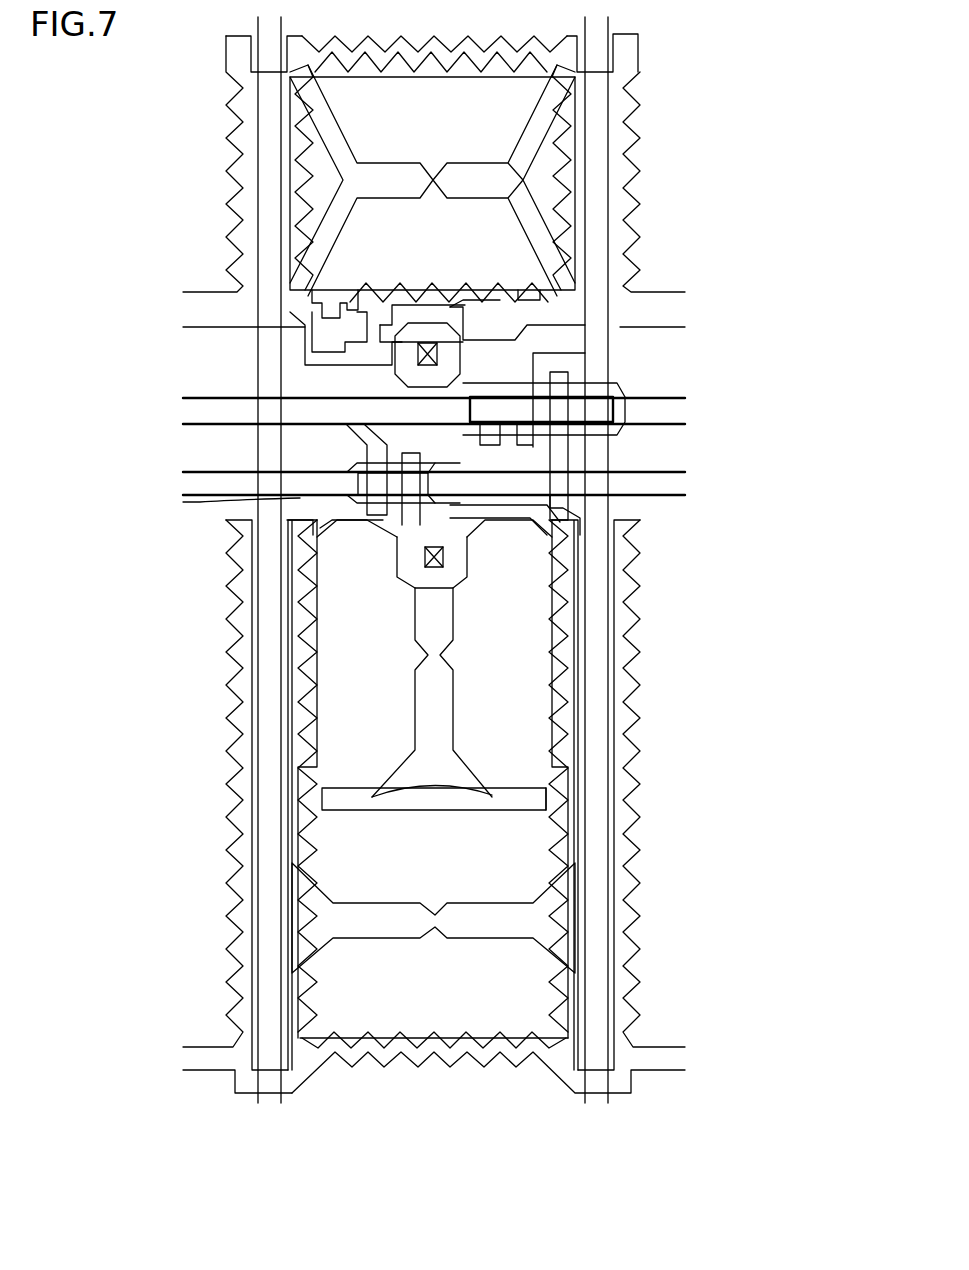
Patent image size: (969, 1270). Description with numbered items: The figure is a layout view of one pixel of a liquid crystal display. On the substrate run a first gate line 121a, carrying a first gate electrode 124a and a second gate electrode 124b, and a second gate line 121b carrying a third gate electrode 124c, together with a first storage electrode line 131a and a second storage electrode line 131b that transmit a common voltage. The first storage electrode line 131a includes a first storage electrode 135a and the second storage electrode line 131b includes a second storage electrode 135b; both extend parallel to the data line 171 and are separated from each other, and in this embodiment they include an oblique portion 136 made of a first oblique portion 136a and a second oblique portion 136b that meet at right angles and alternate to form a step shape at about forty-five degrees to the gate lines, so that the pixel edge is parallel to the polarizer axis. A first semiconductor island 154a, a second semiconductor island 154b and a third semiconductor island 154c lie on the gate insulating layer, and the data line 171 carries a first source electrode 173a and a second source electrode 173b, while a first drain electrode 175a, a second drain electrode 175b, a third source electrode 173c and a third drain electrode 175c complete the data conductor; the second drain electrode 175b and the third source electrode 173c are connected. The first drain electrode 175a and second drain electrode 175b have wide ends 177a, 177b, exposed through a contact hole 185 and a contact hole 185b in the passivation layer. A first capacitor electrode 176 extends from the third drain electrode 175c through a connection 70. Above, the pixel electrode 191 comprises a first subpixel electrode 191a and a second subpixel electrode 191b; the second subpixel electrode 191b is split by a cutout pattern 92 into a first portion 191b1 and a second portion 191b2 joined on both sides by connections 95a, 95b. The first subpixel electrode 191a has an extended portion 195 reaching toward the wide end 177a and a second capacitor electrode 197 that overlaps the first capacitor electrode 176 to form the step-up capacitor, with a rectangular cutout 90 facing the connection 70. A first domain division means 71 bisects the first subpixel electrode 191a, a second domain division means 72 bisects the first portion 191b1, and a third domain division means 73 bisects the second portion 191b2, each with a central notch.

The connection 70 is at (360, 400).
The first domain division means 71 is at (533, 107).
The second domain division means 72 is at (455, 655).
The third domain division means 73 is at (500, 935).
The cutout 90 is at (335, 300).
The cutout pattern 92 is at (500, 808).
The connection 95a is at (322, 805).
The connection 95b is at (546, 806).
The first gate line 121a is at (300, 472).
The second gate line 121b is at (355, 498).
The first gate electrode 124a is at (520, 360).
The second gate electrode 124b is at (600, 455).
The third gate electrode 124c is at (360, 484).
The first storage electrode line 131a is at (240, 292).
The second storage electrode line 131b is at (665, 1070).
The first storage electrode 135a is at (236, 164).
The second storage electrode 135b is at (240, 702).
The oblique portion 136 is at (718, 96).
The first oblique portion 136a is at (628, 118).
The second oblique portion 136b is at (628, 128).
The first semiconductor island 154a is at (575, 500).
The second semiconductor island 154b is at (600, 382).
The third semiconductor island 154c is at (400, 540).
The data line 171 is at (608, 52).
The first source electrode 173a is at (560, 320).
The second source electrode 173b is at (545, 372).
The third source electrode 173c is at (585, 522).
The first drain electrode 175a is at (367, 448).
The second drain electrode 175b is at (620, 472).
The third drain electrode 175c is at (402, 500).
The first capacitor electrode 176 is at (318, 322).
The wide end 177a is at (260, 400).
The wide end 177b is at (470, 580).
The contact hole 185 is at (427, 343).
The contact hole 185b is at (450, 555).
The pixel electrode 191 is at (78, 914).
The first subpixel electrode 191a is at (575, 182).
The second subpixel electrode 191b is at (575, 702).
The first portion 191b1 is at (292, 660).
The second portion 191b2 is at (300, 960).
The extended portion 195 is at (622, 255).
The second capacitor electrode 197 is at (345, 352).